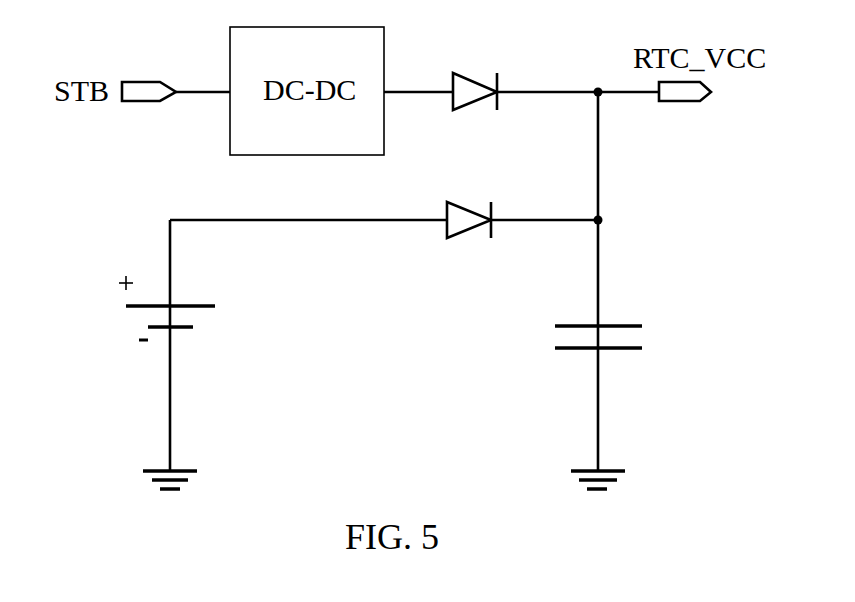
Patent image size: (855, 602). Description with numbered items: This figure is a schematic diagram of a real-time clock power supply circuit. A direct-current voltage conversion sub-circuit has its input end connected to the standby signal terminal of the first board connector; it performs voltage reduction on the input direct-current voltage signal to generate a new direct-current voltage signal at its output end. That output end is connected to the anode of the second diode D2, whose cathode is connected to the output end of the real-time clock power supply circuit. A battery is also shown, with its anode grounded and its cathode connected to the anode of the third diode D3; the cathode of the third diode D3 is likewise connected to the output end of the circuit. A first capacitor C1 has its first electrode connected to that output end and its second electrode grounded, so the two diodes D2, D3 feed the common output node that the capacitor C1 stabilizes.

The second diode D2 is at (475, 70).
The third diode D3 is at (474, 200).
The first capacitor C1 is at (572, 330).